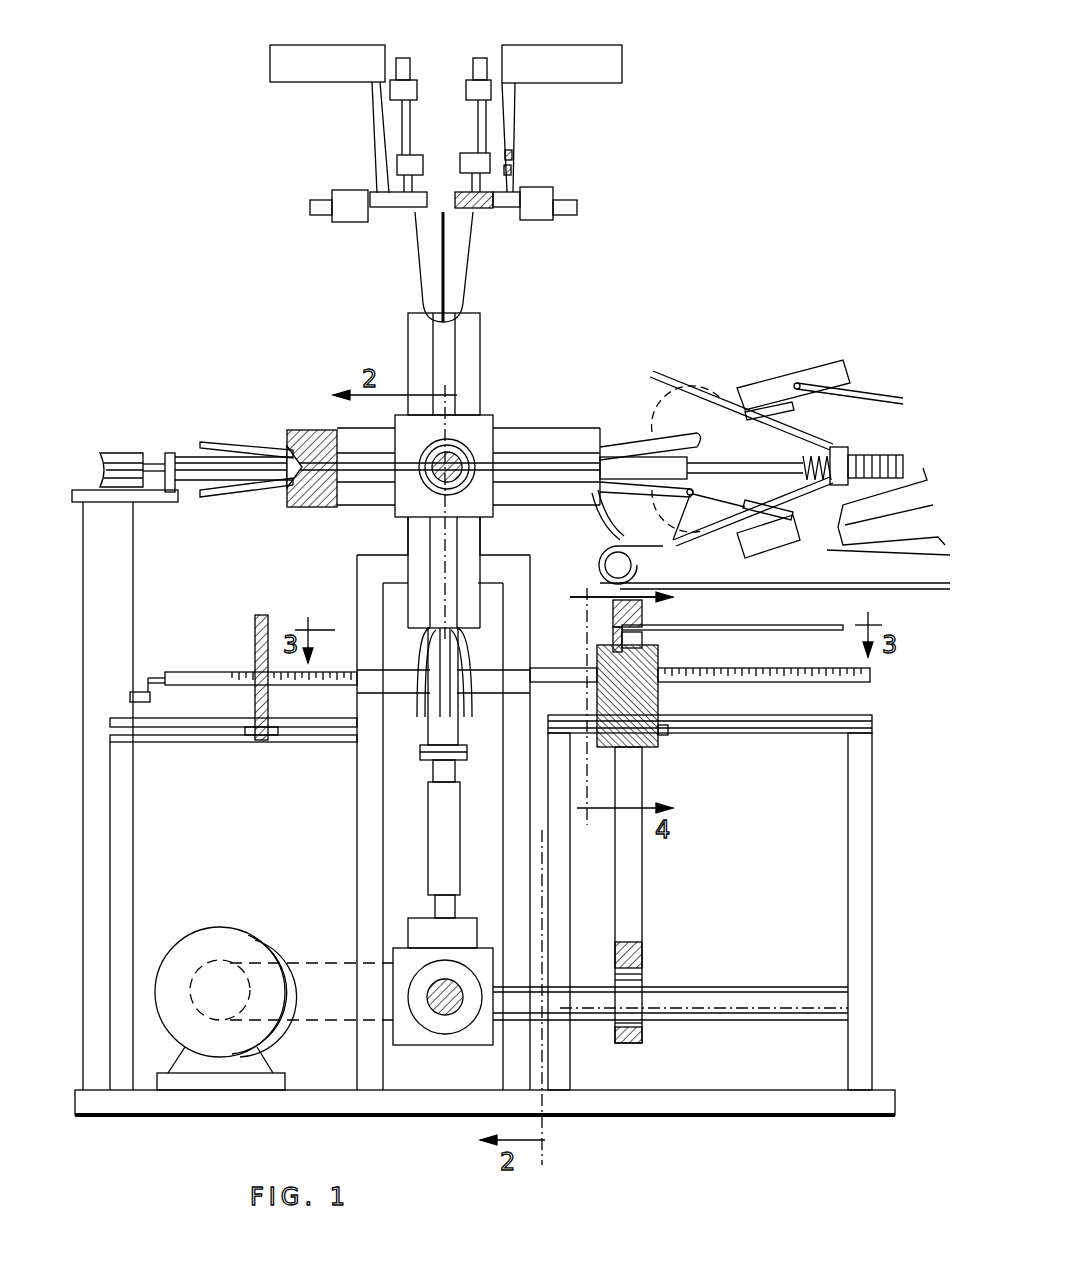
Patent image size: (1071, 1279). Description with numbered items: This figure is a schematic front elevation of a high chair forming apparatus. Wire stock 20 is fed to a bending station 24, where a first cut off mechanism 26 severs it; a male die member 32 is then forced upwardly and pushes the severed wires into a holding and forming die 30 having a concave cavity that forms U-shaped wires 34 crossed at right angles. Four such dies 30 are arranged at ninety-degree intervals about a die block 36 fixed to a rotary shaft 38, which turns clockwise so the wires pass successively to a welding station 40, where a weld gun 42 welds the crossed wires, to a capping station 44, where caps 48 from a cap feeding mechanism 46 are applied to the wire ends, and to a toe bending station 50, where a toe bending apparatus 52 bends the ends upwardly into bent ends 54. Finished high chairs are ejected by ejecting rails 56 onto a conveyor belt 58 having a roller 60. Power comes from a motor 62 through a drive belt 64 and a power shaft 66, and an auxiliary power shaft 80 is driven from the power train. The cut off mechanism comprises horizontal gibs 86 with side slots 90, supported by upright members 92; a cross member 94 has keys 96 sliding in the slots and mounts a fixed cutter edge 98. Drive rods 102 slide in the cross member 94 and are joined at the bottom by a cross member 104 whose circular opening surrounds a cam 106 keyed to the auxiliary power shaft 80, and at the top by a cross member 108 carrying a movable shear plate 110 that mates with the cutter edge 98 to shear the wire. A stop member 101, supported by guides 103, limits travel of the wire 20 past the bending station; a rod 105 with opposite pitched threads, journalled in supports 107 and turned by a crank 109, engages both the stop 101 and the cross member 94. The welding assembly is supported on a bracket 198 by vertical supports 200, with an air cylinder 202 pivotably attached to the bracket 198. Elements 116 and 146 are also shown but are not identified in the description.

The wire stock 20 is at (735, 628).
The bending station 24 is at (385, 690).
The first cut off mechanism 26 is at (595, 592).
The holding and forming die 30 is at (313, 430).
The male die member 32 is at (402, 750).
The U-shaped wires 34 is at (443, 277).
The die block 36 is at (470, 430).
The rotary shaft 38 is at (463, 457).
The welding station 40 is at (262, 430).
The weld gun 42 is at (190, 450).
The capping station 44 is at (482, 280).
The cap feeding mechanism 46 is at (517, 157).
The caps 48 is at (470, 208).
The toe bending station 50 is at (600, 393).
The toe bending apparatus 52 is at (770, 410).
The bent ends 54 is at (692, 500).
The ejecting rails 56 is at (618, 537).
The conveyor belt 58 is at (880, 553).
The roller 60 is at (622, 563).
The motor 62 is at (220, 945).
The drive belt 64 is at (315, 960).
The power shaft 66 is at (438, 1017).
The auxiliary power shaft 80 is at (740, 1000).
The horizontal gib 86 is at (765, 716).
The side slots 90 is at (860, 728).
The upright members 92 is at (562, 948).
The cross member 94 is at (640, 720).
The keys 96 is at (660, 735).
The fixed cutter edge 98 is at (612, 645).
The stop member 101 is at (255, 618).
The drive rods 102 is at (628, 868).
The guides 103 is at (185, 740).
The cross member 104 is at (638, 953).
The rod 105 is at (215, 672).
The cam 106 is at (650, 1015).
The supports 107 is at (365, 680).
The cross member 108 is at (613, 605).
The crank 109 is at (140, 688).
The movable shear plate 110 is at (612, 628).
The base plate 116 is at (648, 1100).
The bushing ring 146 is at (427, 468).
The bracket 198 is at (150, 497).
The vertical supports 200 is at (117, 592).
The air cylinder 202 is at (112, 462).